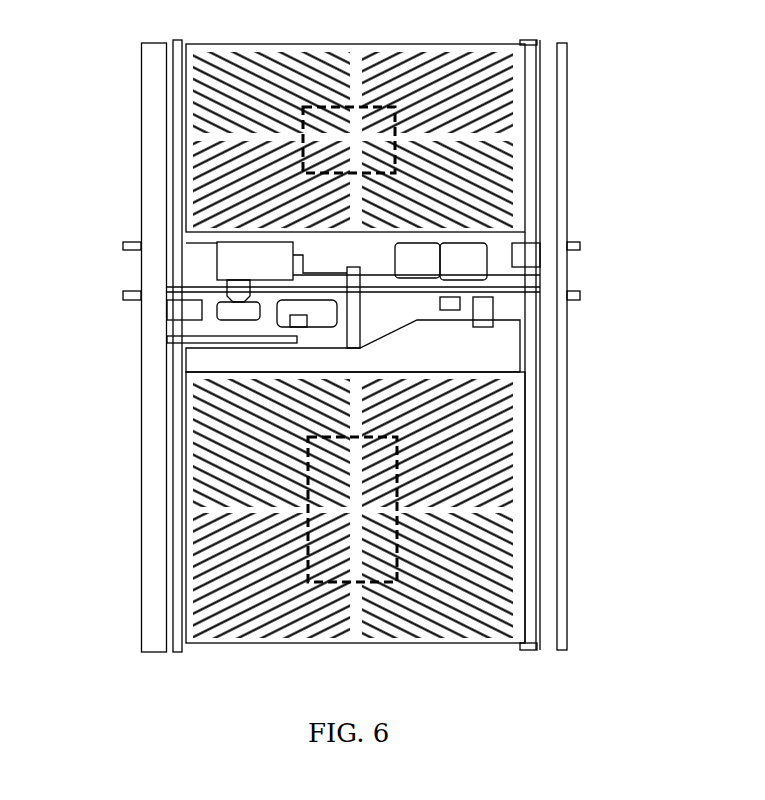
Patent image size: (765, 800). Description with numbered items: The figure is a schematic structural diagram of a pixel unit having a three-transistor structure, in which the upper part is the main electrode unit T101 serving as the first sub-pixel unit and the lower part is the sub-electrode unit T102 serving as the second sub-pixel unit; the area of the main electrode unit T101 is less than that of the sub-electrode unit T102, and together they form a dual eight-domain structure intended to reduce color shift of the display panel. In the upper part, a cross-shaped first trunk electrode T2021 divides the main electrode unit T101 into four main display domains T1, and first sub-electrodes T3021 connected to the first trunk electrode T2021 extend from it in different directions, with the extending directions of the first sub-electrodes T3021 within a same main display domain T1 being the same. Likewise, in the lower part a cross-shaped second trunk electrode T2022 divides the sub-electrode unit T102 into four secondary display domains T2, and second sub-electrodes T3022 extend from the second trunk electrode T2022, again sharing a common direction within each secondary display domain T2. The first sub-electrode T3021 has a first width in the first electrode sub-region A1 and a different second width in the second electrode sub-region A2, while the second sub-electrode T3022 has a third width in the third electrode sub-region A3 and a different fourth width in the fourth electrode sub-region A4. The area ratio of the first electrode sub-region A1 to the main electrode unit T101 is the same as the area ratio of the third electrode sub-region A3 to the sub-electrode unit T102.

The main display domain T1 is at (327, 118).
The secondary display domain T2 is at (340, 485).
The first trunk electrode T2021 is at (213, 127).
The first sub-electrode T3021 is at (195, 145).
The second trunk electrode T2022 is at (235, 507).
The second sub-electrode T3022 is at (240, 505).
The main electrode unit T101 is at (525, 127).
The sub-electrode unit T102 is at (523, 453).
The first electrode sub-region A1 is at (352, 107).
The second electrode sub-region A2 is at (510, 193).
The third electrode sub-region A3 is at (398, 437).
The fourth electrode sub-region A4 is at (503, 513).